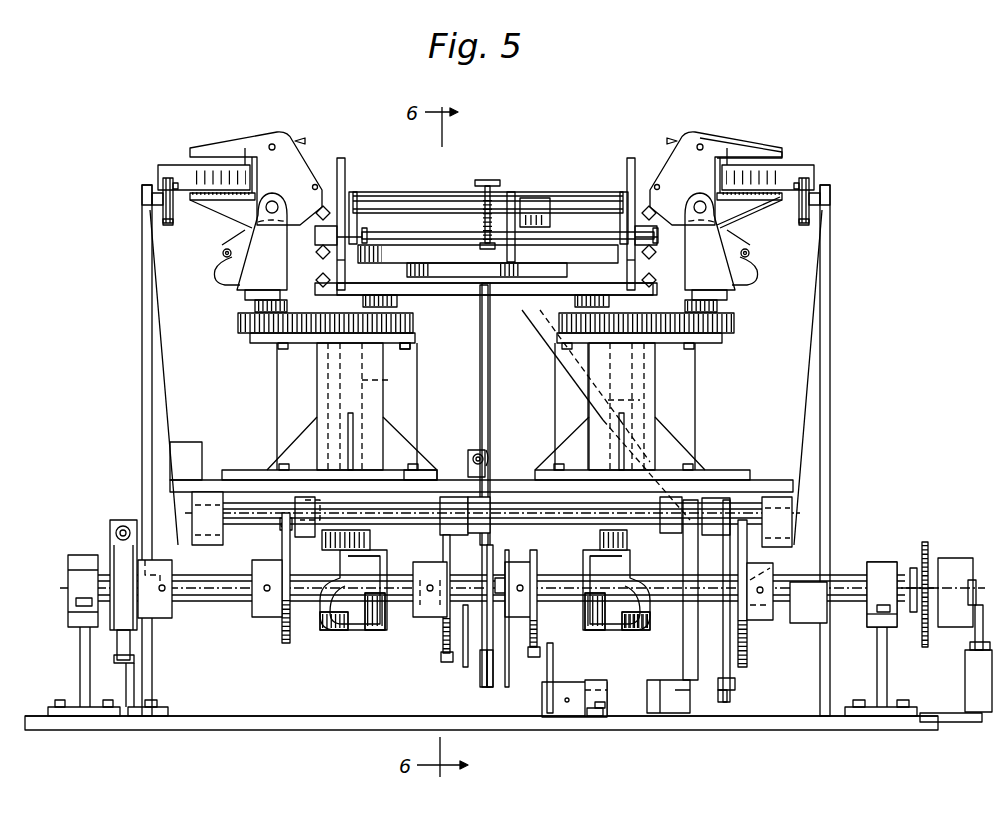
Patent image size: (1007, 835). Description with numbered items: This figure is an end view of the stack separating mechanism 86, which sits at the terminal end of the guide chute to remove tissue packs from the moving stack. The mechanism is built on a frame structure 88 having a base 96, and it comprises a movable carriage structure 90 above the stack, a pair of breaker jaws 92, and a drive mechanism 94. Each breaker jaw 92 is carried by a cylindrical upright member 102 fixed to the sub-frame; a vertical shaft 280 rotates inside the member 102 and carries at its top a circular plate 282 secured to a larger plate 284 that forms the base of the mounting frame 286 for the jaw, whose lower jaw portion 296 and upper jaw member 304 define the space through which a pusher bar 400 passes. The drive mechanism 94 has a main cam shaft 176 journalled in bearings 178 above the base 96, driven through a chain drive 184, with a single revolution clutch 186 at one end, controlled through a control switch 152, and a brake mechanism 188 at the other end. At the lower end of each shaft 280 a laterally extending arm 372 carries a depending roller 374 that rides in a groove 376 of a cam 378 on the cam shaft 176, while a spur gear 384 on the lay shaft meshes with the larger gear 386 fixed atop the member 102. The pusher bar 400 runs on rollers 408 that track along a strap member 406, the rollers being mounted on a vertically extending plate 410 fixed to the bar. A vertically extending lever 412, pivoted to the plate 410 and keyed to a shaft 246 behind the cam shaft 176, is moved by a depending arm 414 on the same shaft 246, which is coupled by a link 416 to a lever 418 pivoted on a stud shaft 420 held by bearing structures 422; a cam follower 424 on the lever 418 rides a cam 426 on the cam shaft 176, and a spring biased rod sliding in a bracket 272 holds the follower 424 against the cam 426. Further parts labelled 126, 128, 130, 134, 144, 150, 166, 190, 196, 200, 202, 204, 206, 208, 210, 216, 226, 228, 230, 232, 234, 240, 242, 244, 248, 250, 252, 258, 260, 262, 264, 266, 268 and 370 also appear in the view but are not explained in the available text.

The stack separating mechanism 86 is at (552, 126).
The frame structure 88 is at (265, 716).
The movable carriage structure 90 is at (305, 283).
The breaker jaw 92 is at (255, 128).
The drive mechanism 94 is at (888, 527).
The base 96 is at (215, 728).
The cylindrical upright member 102 is at (587, 400).
The lower roll block 126 is at (392, 266).
The shaft 128 is at (438, 236).
The lower roll 130 is at (490, 262).
The upper roll 134 is at (410, 183).
The adjusting screw 144 is at (488, 178).
The bearing block 150 is at (530, 205).
The control switch 152 is at (551, 217).
The gear plate 166 is at (432, 315).
The main cam shaft 176 is at (852, 580).
The bearings 178 is at (85, 565).
The chain drive 184 is at (930, 548).
The single revolution clutch 186 is at (950, 635).
The brake mechanism 188 is at (110, 535).
The threaded rod 190 is at (537, 630).
The diagonal brace 196 is at (558, 362).
The clamp 200 is at (672, 680).
The vertical bar 202 is at (690, 626).
The block 204 is at (620, 700).
The fastener 206 is at (600, 726).
The bracket 208 is at (553, 668).
The nut 210 is at (530, 658).
The threaded rod 216 is at (750, 646).
The nut 226 is at (735, 684).
The rod end 228 is at (727, 702).
The table plate 230 is at (748, 505).
The collar 232 is at (212, 540).
The block 234 is at (763, 582).
The threaded rod 240 is at (442, 636).
The post 242 is at (490, 312).
The center post 244 is at (480, 402).
The shaft 246 is at (225, 607).
The nut 248 is at (440, 658).
The link 250 is at (490, 460).
The pivot bracket 252 is at (470, 457).
The threaded rod 258 is at (280, 640).
The column housing 260 is at (315, 380).
The mounting block 262 is at (296, 497).
The base plate 264 is at (395, 497).
The nut 266 is at (286, 530).
The bolt 268 is at (278, 526).
The bracket 272 is at (188, 442).
The vertical shaft 280 is at (527, 390).
The circular plate 282 is at (580, 305).
The larger plate 284 is at (598, 292).
The mounting frame 286 is at (282, 270).
The lower jaw portion 296 is at (749, 148).
The upper jaw member 304 is at (752, 215).
The bracket 370 is at (485, 590).
The laterally extending arm 372 is at (372, 542).
The depending roller 374 is at (352, 566).
The groove 376 is at (372, 632).
The cam 378 is at (328, 632).
The spur gear 384 is at (237, 323).
The larger gear 386 is at (420, 343).
The pusher bar 400 is at (182, 165).
The strap member 406 is at (170, 207).
The rollers 408 is at (162, 163).
The vertically extending plate 410 is at (147, 222).
The vertically extending lever 412 is at (143, 350).
The depending arm 414 is at (509, 690).
The link 416 is at (490, 683).
The lever 418 is at (482, 686).
The stud shaft 420 is at (480, 495).
The bearing structures 422 is at (445, 495).
The cam follower 424 is at (508, 575).
The cam 426 is at (487, 565).